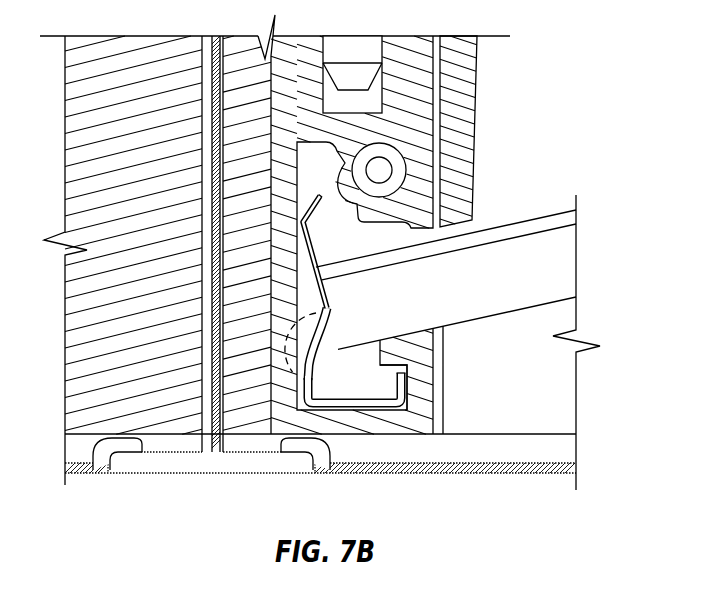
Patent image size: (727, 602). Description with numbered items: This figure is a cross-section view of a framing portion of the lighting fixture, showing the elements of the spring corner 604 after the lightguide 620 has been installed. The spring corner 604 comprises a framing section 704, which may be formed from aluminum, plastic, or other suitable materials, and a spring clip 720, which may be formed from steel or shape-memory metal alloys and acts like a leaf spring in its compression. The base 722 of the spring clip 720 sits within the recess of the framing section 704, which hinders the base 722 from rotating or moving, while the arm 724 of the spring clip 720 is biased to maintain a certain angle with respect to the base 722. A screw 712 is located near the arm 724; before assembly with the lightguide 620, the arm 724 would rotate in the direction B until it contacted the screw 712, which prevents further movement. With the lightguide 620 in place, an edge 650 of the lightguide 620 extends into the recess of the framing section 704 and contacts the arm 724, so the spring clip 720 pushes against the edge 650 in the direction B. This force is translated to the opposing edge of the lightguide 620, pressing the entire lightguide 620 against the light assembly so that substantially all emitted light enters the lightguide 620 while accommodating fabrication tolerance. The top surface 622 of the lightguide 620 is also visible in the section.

The spring corner 604 is at (191, 179).
The screw 712 is at (385, 152).
The top surface of panel 622 is at (557, 223).
The lightguide 620 is at (521, 253).
The arm 724 is at (318, 256).
The edge 650 is at (326, 310).
The spring clip 720 is at (334, 338).
The base 722 is at (385, 397).
The framing section 704 is at (420, 377).
The direction B is at (292, 340).